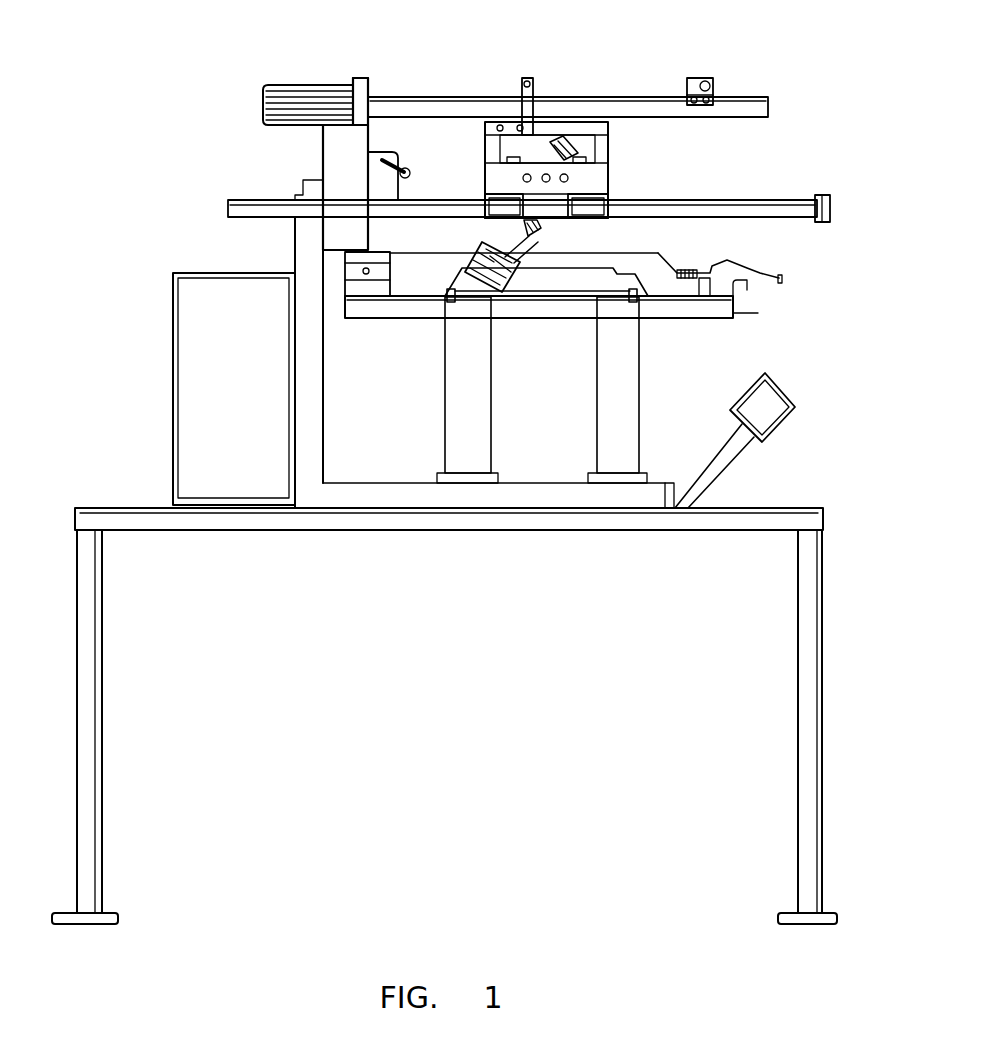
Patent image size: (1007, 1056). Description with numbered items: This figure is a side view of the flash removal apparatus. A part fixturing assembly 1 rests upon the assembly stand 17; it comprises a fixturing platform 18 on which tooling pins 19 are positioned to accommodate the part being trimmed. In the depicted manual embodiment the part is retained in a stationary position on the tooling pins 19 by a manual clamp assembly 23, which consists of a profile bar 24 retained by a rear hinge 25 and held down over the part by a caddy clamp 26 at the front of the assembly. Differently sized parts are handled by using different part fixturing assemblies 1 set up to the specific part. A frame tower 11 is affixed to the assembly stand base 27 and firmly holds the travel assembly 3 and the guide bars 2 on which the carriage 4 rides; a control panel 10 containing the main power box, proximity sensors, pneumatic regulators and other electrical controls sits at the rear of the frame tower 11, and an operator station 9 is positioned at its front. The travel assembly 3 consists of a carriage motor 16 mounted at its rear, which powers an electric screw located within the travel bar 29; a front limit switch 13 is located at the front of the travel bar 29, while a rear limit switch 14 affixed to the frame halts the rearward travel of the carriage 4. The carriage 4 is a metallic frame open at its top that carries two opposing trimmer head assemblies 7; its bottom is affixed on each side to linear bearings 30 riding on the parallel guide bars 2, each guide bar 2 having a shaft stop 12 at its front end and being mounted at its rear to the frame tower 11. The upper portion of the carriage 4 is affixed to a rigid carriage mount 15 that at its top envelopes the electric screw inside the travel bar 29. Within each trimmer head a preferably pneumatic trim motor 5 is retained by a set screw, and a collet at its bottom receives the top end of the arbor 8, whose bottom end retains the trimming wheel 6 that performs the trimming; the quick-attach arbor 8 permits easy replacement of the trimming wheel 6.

The part fixturing assembly 1 is at (792, 334).
The guide bars 2 is at (832, 207).
The travel assembly 3 is at (379, 128).
The carriage 4 is at (492, 148).
The trim motor 5 is at (579, 152).
The trimming wheel 6 is at (478, 253).
The trimmer head assemblies 7 is at (598, 180).
The arbor 8 is at (521, 241).
The operator station 9 is at (770, 421).
The control panel 10 is at (244, 394).
The frame tower 11 is at (295, 240).
The shaft stop 12 is at (822, 194).
The front limit switch 13 is at (705, 78).
The rear limit switch 14 is at (410, 176).
The carriage mount 15 is at (550, 120).
The carriage motor 16 is at (310, 87).
The assembly stand 17 is at (477, 450).
The fixturing platform 18 is at (675, 313).
The tooling pins 19 is at (449, 298).
The manual clamp assembly 23 is at (613, 268).
The profile bar 24 is at (666, 257).
The rear hinge 25 is at (366, 288).
The caddy clamp 26 is at (783, 279).
The assembly stand base 27 is at (381, 482).
The travel bar 29 is at (770, 103).
The linear bearings 30 is at (598, 202).